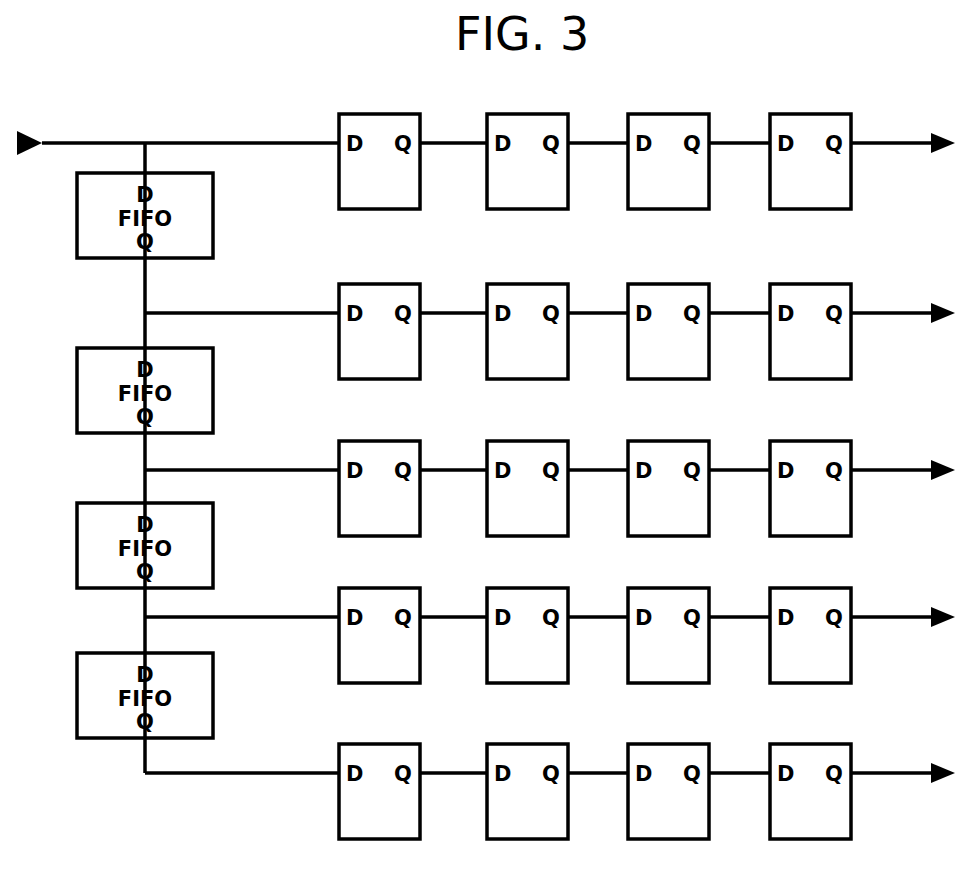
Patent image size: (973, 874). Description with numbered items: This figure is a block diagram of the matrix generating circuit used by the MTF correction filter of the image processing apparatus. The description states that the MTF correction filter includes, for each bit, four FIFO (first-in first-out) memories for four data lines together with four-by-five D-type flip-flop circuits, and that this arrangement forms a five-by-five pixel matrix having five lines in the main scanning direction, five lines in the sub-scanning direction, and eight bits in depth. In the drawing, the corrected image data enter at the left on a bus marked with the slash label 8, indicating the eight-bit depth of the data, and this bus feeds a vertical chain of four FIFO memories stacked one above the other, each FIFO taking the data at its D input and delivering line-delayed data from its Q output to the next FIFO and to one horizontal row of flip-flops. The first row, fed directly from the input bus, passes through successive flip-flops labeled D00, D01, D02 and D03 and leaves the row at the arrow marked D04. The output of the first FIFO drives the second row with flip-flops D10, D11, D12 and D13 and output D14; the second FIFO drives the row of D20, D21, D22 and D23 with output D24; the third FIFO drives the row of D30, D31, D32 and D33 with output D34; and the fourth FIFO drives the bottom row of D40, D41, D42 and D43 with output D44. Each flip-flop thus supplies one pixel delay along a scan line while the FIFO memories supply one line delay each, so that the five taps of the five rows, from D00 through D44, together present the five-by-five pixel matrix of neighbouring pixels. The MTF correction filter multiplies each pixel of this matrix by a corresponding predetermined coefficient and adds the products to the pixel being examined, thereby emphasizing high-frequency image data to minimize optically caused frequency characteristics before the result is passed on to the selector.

The 8-bit input data bus 8 is at (87, 151).
The row 0 stage 0 D flip-flop D00 is at (358, 149).
The row 0 stage 1 D flip-flop D01 is at (506, 149).
The row 0 stage 2 D flip-flop D02 is at (647, 149).
The row 0 stage 3 D flip-flop D03 is at (789, 149).
The row 0 output D04 is at (903, 121).
The row 1 stage 0 D flip-flop D10 is at (358, 319).
The row 1 stage 1 D flip-flop D11 is at (506, 319).
The row 1 stage 2 D flip-flop D12 is at (647, 319).
The row 1 stage 3 D flip-flop D13 is at (789, 319).
The row 1 output D14 is at (903, 291).
The row 2 stage 0 D flip-flop D20 is at (358, 476).
The row 2 stage 1 D flip-flop D21 is at (506, 476).
The row 2 stage 2 D flip-flop D22 is at (647, 476).
The row 2 stage 3 D flip-flop D23 is at (789, 476).
The row 2 output D24 is at (903, 448).
The row 3 stage 0 D flip-flop D30 is at (358, 623).
The row 3 stage 1 D flip-flop D31 is at (506, 623).
The row 3 stage 2 D flip-flop D32 is at (647, 623).
The row 3 stage 3 D flip-flop D33 is at (789, 623).
The row 3 output D34 is at (903, 595).
The row 4 stage 0 D flip-flop D40 is at (358, 779).
The row 4 stage 1 D flip-flop D41 is at (506, 779).
The row 4 stage 2 D flip-flop D42 is at (647, 779).
The row 4 stage 3 D flip-flop D43 is at (789, 779).
The row 4 output D44 is at (903, 751).